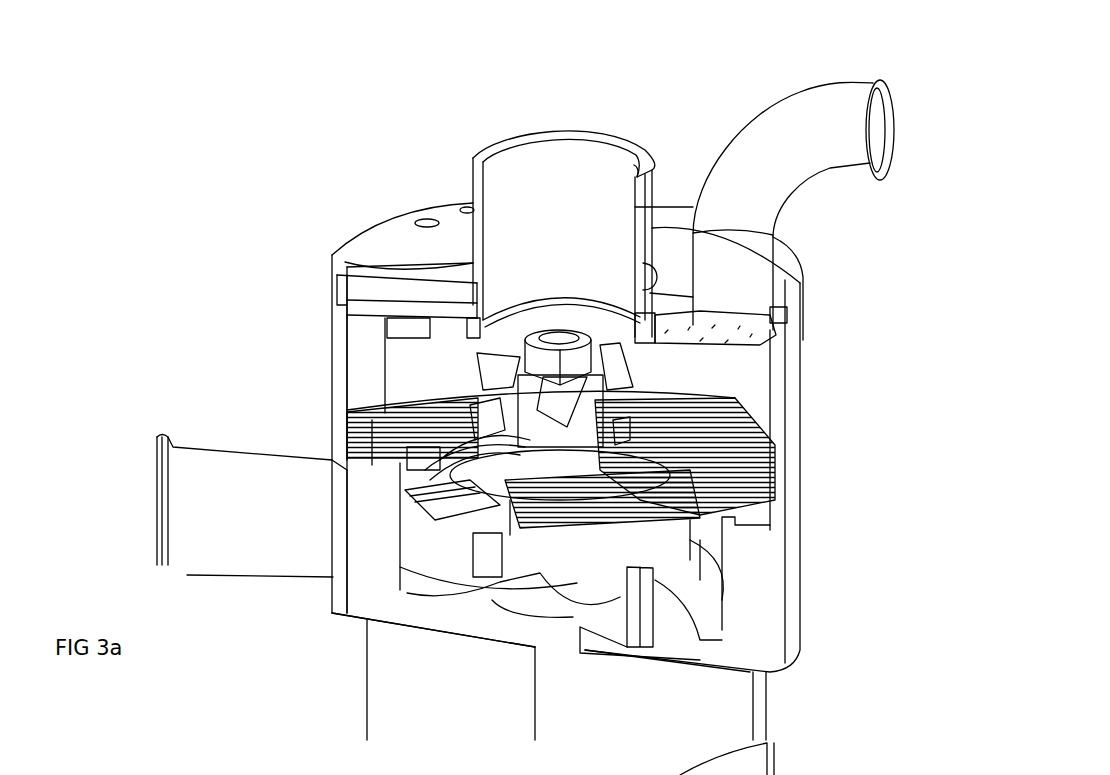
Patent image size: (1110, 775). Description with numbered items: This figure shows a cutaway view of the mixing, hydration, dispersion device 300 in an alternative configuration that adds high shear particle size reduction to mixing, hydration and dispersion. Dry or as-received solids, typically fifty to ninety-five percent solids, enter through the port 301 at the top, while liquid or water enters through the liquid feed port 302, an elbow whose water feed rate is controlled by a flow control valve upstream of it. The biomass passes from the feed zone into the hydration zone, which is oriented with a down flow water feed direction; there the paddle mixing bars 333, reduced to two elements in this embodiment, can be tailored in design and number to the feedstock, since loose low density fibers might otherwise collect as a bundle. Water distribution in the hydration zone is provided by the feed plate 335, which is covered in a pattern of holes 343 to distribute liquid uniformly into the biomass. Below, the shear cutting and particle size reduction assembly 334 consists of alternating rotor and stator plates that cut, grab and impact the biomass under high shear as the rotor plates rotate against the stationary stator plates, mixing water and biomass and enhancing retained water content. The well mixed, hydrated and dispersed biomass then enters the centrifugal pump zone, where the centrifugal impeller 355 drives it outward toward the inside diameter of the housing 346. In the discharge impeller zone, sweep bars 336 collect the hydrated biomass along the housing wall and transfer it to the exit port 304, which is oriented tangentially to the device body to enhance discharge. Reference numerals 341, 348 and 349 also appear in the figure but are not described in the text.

The mixing, hydration, dispersion device 300 is at (205, 675).
The port 301 is at (470, 153).
The liquid feed port 302 is at (850, 83).
The exit port 304 is at (171, 425).
The paddle mixing bars 333 is at (579, 410).
The shear cutting and particle size reduction assembly 334 is at (770, 487).
The feed plate 335 is at (663, 330).
The sweep bars 336 is at (355, 540).
The base plate 341 is at (547, 645).
The holes 343 is at (738, 335).
The housing 346 is at (725, 578).
The internal body 348 is at (455, 358).
The housing 349 is at (330, 343).
The centrifugal impeller 355 is at (463, 555).